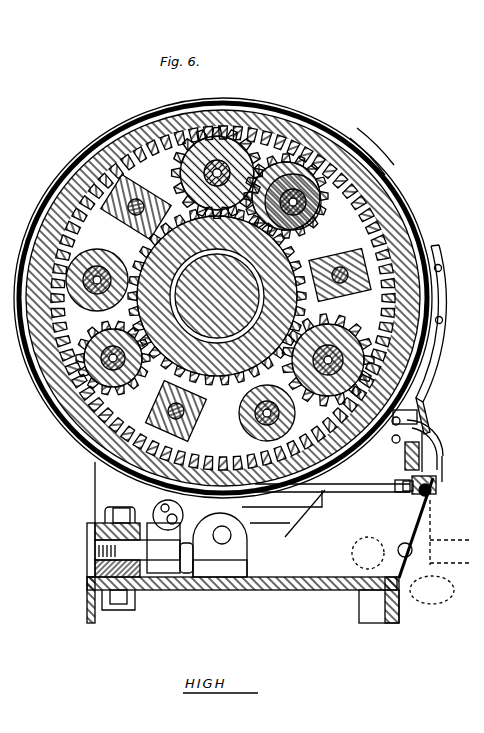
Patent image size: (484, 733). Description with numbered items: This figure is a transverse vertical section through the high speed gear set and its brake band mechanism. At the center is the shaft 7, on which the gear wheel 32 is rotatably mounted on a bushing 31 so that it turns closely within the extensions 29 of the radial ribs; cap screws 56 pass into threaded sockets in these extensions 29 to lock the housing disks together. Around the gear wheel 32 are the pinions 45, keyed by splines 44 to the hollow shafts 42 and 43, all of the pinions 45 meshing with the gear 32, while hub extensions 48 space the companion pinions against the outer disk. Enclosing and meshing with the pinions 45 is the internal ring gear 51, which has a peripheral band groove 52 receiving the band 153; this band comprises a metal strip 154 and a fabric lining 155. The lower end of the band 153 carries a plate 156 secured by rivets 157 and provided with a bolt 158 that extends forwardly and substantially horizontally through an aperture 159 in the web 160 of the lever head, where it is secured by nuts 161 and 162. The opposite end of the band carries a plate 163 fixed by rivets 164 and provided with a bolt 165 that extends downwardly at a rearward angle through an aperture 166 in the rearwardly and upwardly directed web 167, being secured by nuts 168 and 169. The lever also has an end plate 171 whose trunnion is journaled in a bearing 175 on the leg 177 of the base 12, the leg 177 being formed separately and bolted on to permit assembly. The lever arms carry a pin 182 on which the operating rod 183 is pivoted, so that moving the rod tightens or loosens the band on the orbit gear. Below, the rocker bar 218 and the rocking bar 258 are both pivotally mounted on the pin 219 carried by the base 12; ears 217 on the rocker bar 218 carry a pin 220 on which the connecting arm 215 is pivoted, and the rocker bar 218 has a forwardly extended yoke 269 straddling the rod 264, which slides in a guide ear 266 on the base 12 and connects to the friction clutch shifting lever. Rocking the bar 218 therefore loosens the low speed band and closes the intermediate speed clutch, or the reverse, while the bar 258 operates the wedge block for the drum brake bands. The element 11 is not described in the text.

The band 153 is at (96, 128).
The metal strip 154 is at (88, 148).
The fabric lining 155 is at (80, 163).
The internal ring gear 51 is at (370, 182).
The peripheral band groove 52 is at (385, 192).
The gear wheel 32 is at (160, 244).
The pinion 45 is at (188, 170).
The hollow shaft 42 is at (279, 180).
The spline 44 is at (316, 212).
The hollow shaft 43 is at (320, 226).
The shaft 7 is at (292, 243).
The extension 29 is at (118, 222).
The cap screw 56 is at (118, 208).
The hub extension 48 is at (342, 262).
The bushing 31 is at (247, 400).
The plate 163 is at (438, 306).
The rivet 164 is at (440, 286).
The bolt 165 is at (436, 360).
The nut 169 is at (417, 410).
The end plate 171 is at (440, 460).
The aperture 166 is at (420, 430).
The nut 168 is at (436, 438).
The web 167 is at (443, 448).
The bearing 175 is at (441, 468).
The web 160 is at (432, 490).
The nut 162 is at (437, 496).
The nut 161 is at (436, 508).
The bolt 158 is at (332, 494).
The aperture 159 is at (408, 494).
The rivet 157 is at (322, 500).
The plate 156 is at (288, 526).
The connecting arm 215 is at (255, 542).
The rod 264 is at (220, 580).
The guide ear 266 is at (252, 582).
The base 12 is at (87, 590).
The leg 177 is at (345, 584).
The yoke 269 is at (138, 602).
The frame 11 is at (95, 469).
The pin 219 is at (105, 516).
The rocker bar 218 is at (95, 528).
The ear 217 is at (137, 550).
The rocking bar 258 is at (95, 566).
The pin 220 is at (158, 502).
The pin 182 is at (398, 550).
The operating rod 183 is at (442, 566).